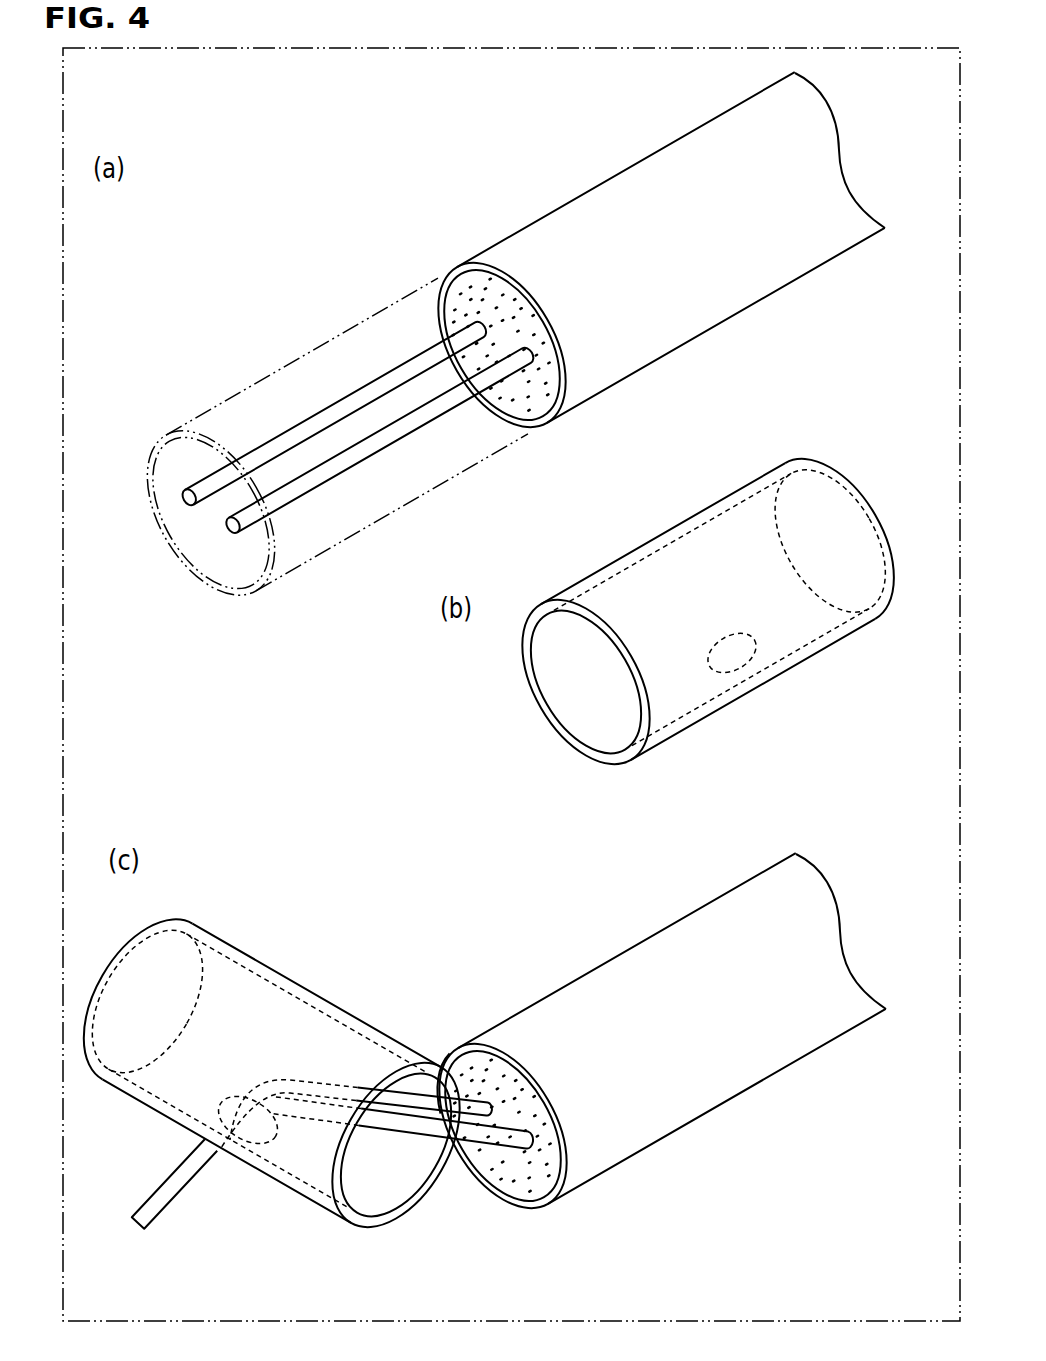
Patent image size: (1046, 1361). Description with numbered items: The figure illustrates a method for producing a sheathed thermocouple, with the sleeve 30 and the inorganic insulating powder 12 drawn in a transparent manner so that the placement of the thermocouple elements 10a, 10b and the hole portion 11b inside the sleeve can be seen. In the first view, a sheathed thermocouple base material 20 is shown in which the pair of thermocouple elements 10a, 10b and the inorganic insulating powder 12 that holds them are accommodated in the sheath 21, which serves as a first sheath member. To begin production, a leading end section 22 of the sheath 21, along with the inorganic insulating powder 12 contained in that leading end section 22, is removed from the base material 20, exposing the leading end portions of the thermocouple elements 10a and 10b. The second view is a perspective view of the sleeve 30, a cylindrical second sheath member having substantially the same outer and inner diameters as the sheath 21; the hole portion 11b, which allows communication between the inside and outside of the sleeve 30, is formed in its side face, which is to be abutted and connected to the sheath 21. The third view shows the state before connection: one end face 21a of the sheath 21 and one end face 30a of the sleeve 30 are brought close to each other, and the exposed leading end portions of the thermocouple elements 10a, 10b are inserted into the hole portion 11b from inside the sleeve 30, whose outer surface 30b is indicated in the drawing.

The sheathed thermocouple base material 20 is at (634, 643).
The sheath 21 is at (605, 215).
The one end face of the sheath 21a is at (444, 1046).
The inorganic insulating powder 12 is at (466, 298).
The leading end section 22 is at (370, 313).
The thermocouple element 10a is at (186, 498).
The thermocouple element 10b is at (230, 528).
The sleeve 30 is at (488, 846).
The one end face of the sleeve 30a is at (353, 1228).
The sleeve outer surface 30b is at (278, 968).
The hole portion 11b is at (745, 668).